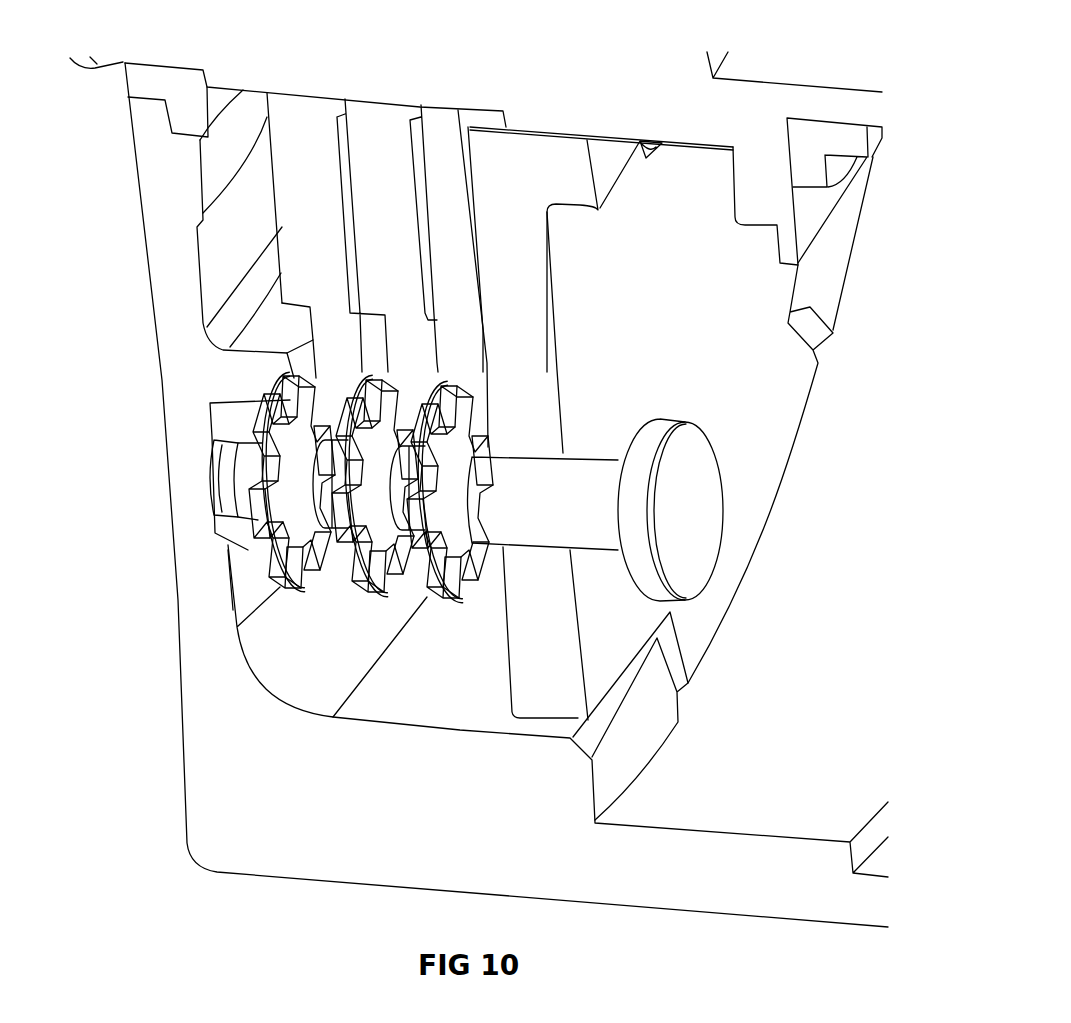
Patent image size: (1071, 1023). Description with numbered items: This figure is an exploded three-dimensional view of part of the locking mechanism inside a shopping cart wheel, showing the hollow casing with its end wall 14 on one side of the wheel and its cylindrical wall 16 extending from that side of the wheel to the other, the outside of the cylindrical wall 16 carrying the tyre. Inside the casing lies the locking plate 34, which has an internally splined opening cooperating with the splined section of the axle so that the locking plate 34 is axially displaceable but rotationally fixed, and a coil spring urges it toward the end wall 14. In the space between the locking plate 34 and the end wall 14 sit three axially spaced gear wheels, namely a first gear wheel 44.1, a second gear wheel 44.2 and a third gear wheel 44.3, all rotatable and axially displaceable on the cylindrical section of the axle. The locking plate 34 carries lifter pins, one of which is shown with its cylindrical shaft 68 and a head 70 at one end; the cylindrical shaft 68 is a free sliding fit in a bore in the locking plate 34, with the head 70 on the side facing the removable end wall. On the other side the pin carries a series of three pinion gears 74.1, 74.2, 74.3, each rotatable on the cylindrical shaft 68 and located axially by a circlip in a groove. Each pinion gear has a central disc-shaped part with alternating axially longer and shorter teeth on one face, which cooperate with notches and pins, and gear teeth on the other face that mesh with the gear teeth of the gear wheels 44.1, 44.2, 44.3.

The end wall 14 is at (197, 598).
The cylindrical wall 16 is at (723, 847).
The locking plate 34 is at (540, 340).
The first gear wheel 44.1 is at (302, 107).
The second gear wheel 44.2 is at (378, 112).
The third gear wheel 44.3 is at (458, 261).
The cylindrical shaft 68 is at (603, 470).
The head 70 is at (697, 563).
The pinion gear 74.1 is at (320, 585).
The pinion gear 74.2 is at (395, 597).
The pinion gear 74.3 is at (490, 603).